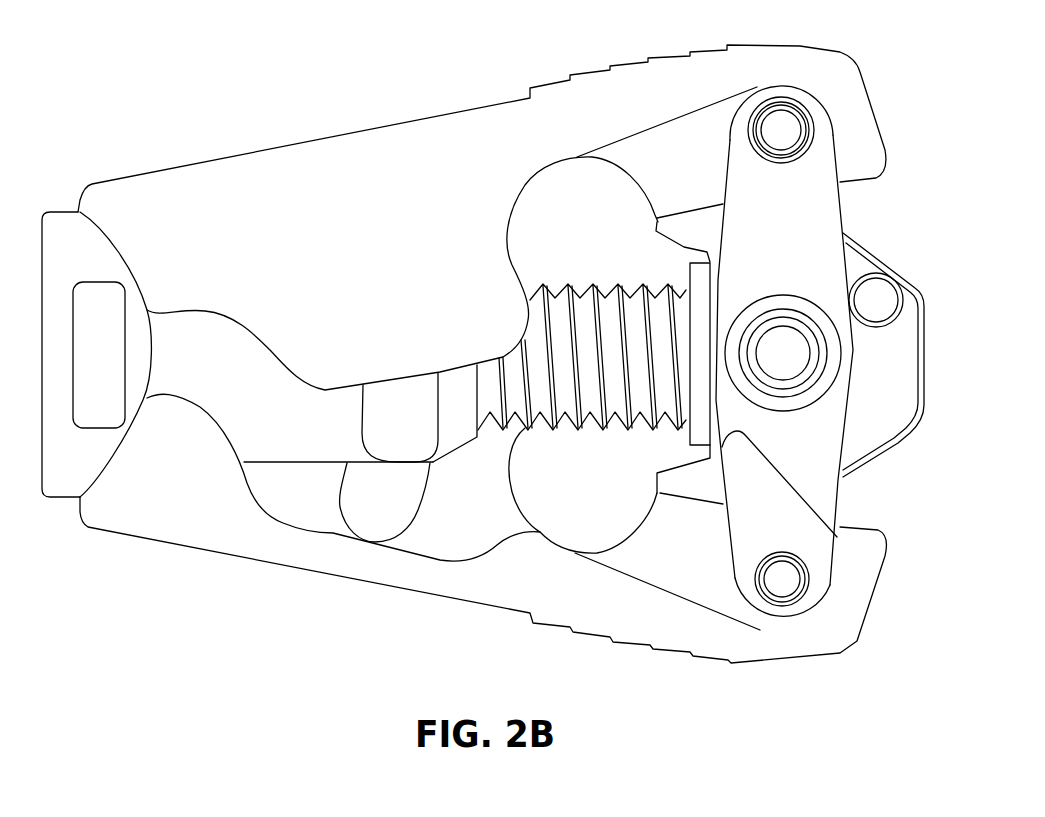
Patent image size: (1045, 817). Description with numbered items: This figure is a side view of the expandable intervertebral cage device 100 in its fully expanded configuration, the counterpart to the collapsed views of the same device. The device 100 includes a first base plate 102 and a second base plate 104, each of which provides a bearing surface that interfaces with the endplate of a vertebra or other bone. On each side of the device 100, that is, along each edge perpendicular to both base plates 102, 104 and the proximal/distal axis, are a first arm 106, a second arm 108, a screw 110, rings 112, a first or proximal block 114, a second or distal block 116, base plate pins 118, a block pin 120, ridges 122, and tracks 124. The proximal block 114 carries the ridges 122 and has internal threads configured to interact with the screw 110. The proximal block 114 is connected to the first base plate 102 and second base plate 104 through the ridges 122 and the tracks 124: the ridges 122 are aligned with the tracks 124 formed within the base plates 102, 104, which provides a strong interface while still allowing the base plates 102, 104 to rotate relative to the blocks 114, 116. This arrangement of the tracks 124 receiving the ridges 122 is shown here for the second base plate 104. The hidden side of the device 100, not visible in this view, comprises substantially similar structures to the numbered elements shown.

The intervertebral cage device 100 is at (170, 78).
The first base plate 102 is at (328, 155).
The second base plate 104 is at (467, 587).
The first arm 106 is at (820, 170).
The second arm 108 is at (742, 583).
The screw 110 is at (585, 317).
The rings 112 is at (753, 300).
The proximal block 114 is at (56, 226).
The distal block 116 is at (880, 437).
The base plate pins 118 is at (782, 587).
The block pin 120 is at (876, 287).
The ridges 122 is at (375, 437).
The tracks 124 is at (373, 533).